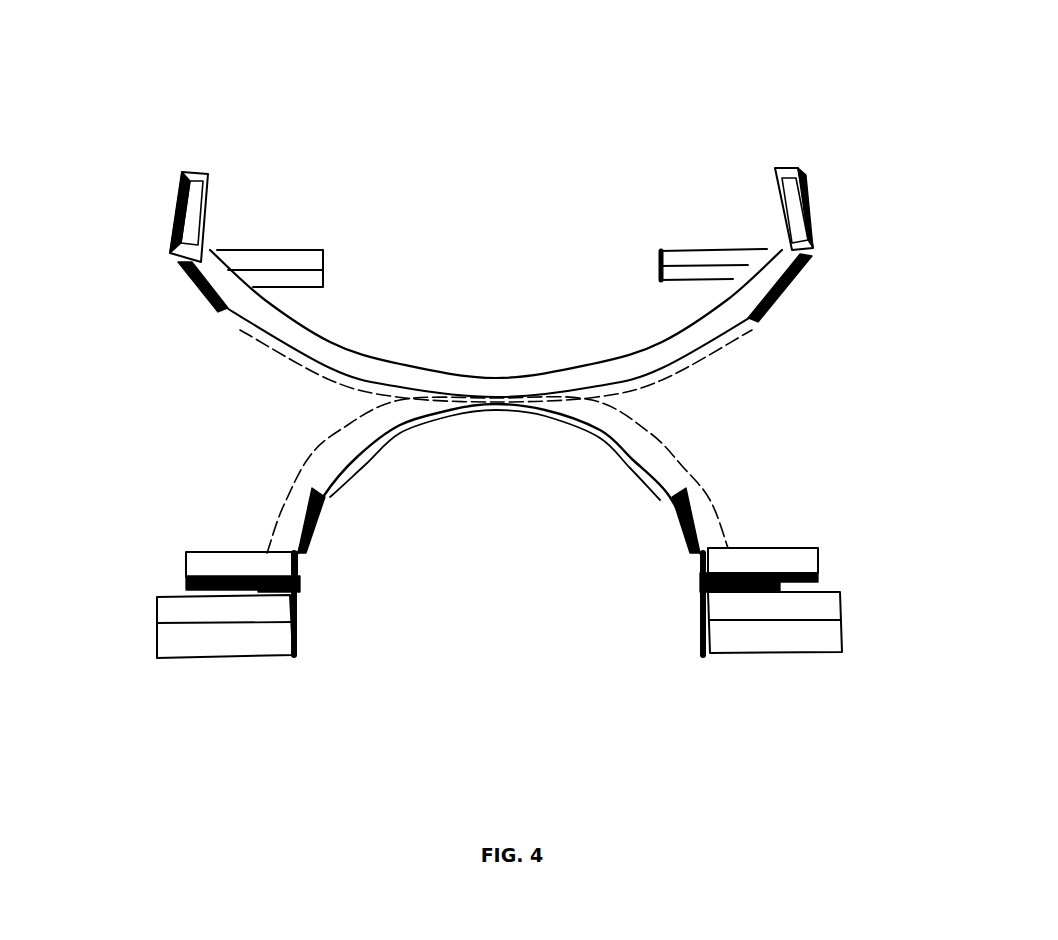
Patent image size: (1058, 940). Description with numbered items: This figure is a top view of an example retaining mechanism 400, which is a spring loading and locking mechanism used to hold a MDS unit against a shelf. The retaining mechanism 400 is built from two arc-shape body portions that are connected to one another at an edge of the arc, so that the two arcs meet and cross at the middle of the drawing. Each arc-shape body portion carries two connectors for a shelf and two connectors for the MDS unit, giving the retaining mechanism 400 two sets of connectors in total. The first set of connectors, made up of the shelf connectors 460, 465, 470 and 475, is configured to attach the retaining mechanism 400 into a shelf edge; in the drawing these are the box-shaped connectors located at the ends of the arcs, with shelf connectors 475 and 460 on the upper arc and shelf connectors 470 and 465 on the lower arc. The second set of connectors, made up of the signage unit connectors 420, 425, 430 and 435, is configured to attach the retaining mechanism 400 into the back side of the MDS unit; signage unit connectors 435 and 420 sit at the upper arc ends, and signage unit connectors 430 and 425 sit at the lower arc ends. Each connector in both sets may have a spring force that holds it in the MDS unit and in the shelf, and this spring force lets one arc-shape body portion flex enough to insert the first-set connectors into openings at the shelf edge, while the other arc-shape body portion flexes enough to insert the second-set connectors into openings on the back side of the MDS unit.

The retaining mechanism 400 is at (420, 84).
The connector 420 is at (800, 172).
The connector 425 is at (745, 549).
The connector 430 is at (208, 552).
The connector 435 is at (210, 172).
The connector 460 is at (690, 250).
The connector 465 is at (697, 643).
The connector 470 is at (156, 637).
The connector 475 is at (283, 250).